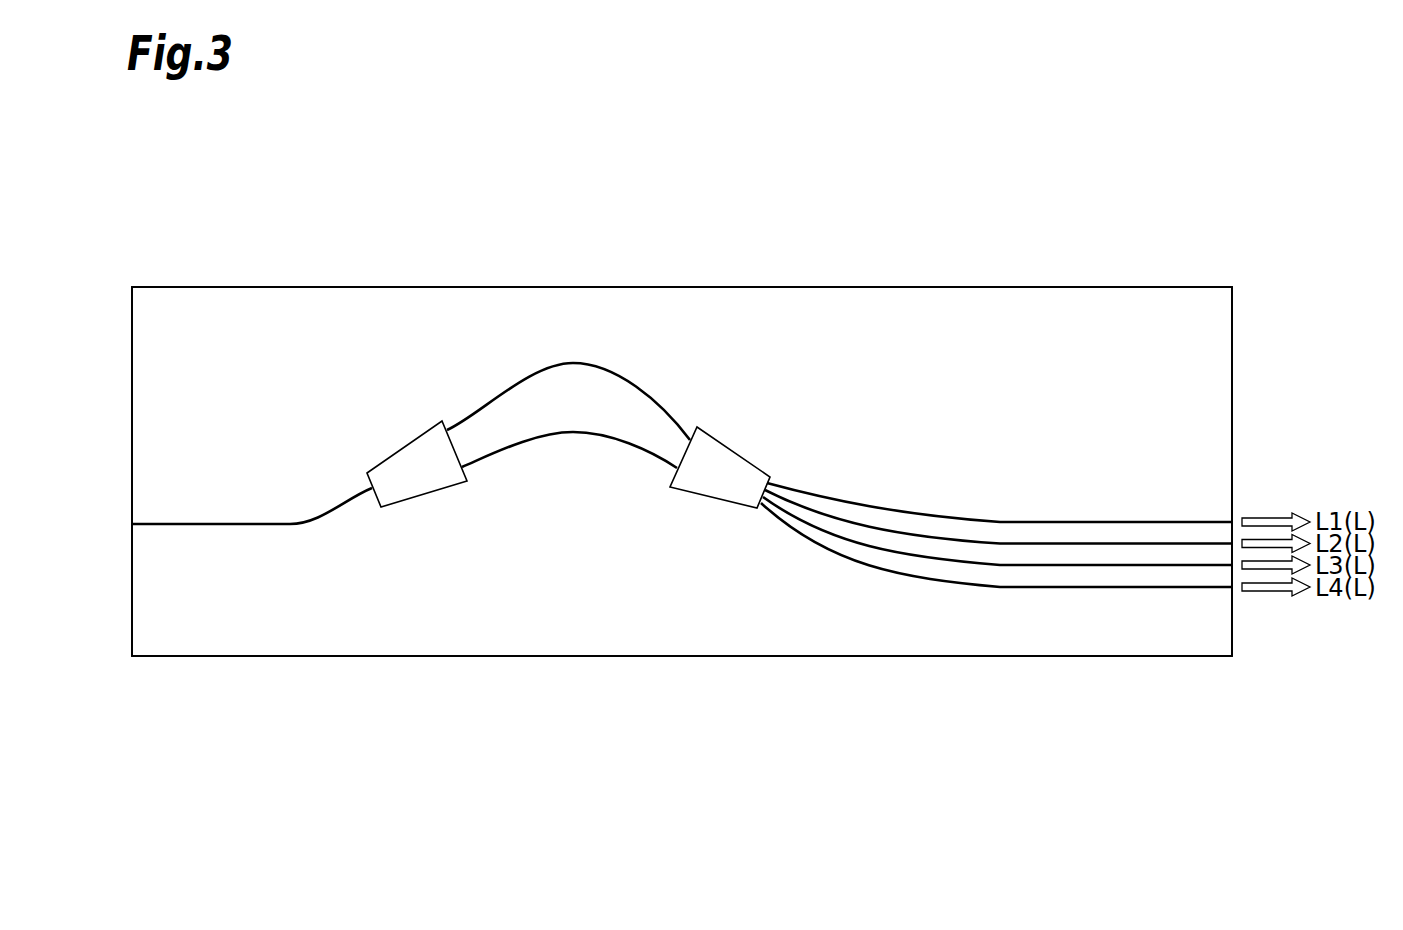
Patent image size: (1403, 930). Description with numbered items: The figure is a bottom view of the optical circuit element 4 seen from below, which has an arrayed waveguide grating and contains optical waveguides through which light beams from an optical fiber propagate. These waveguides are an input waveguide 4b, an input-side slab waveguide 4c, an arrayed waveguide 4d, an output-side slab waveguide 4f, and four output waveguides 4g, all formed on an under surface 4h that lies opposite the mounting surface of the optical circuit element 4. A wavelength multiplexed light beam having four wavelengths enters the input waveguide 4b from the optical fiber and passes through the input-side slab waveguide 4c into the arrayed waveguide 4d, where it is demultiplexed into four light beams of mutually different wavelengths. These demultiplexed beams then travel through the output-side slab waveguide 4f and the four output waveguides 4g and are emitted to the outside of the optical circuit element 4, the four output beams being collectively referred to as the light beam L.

The optical circuit element 4 is at (1033, 286).
The input waveguide 4b is at (184, 527).
The input-side slab waveguide 4c is at (405, 485).
The arrayed waveguide 4d is at (573, 362).
The output-side slab waveguide 4f is at (720, 480).
The output waveguides 4g is at (1003, 522).
The under surface 4h is at (913, 313).